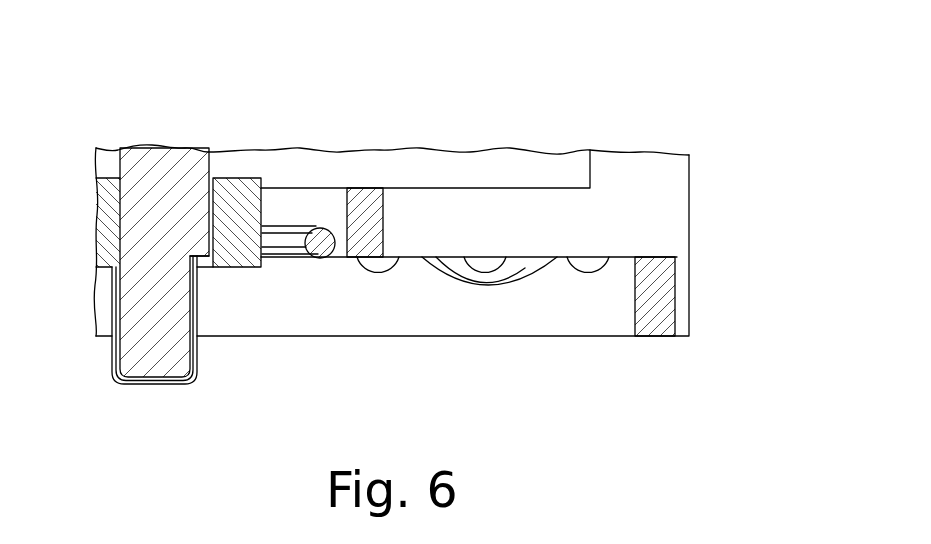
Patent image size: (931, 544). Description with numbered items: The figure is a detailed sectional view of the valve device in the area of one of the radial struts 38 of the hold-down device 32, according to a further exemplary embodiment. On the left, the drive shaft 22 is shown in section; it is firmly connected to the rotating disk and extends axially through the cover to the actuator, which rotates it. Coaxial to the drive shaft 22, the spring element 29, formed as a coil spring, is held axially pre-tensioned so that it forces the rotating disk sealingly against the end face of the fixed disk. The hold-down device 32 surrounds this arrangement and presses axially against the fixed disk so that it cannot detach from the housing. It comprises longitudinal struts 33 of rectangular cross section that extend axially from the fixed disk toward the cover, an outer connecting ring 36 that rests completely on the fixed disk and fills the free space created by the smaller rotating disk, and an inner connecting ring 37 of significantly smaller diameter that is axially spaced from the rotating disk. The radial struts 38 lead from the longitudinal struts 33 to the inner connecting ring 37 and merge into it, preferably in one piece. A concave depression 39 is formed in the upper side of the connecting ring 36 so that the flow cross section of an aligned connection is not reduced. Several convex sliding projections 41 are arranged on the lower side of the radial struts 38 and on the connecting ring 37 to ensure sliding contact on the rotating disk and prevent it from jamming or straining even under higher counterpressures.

The drive shaft 22 is at (162, 363).
The spring element 29 is at (292, 222).
The hold-down device 32 is at (563, 98).
The longitudinal struts 33 is at (668, 202).
The connecting ring 36 is at (667, 315).
The connecting ring 37 is at (363, 212).
The radial struts 38 is at (455, 212).
The depressions 39 is at (525, 268).
The sliding projections 41 is at (380, 275).